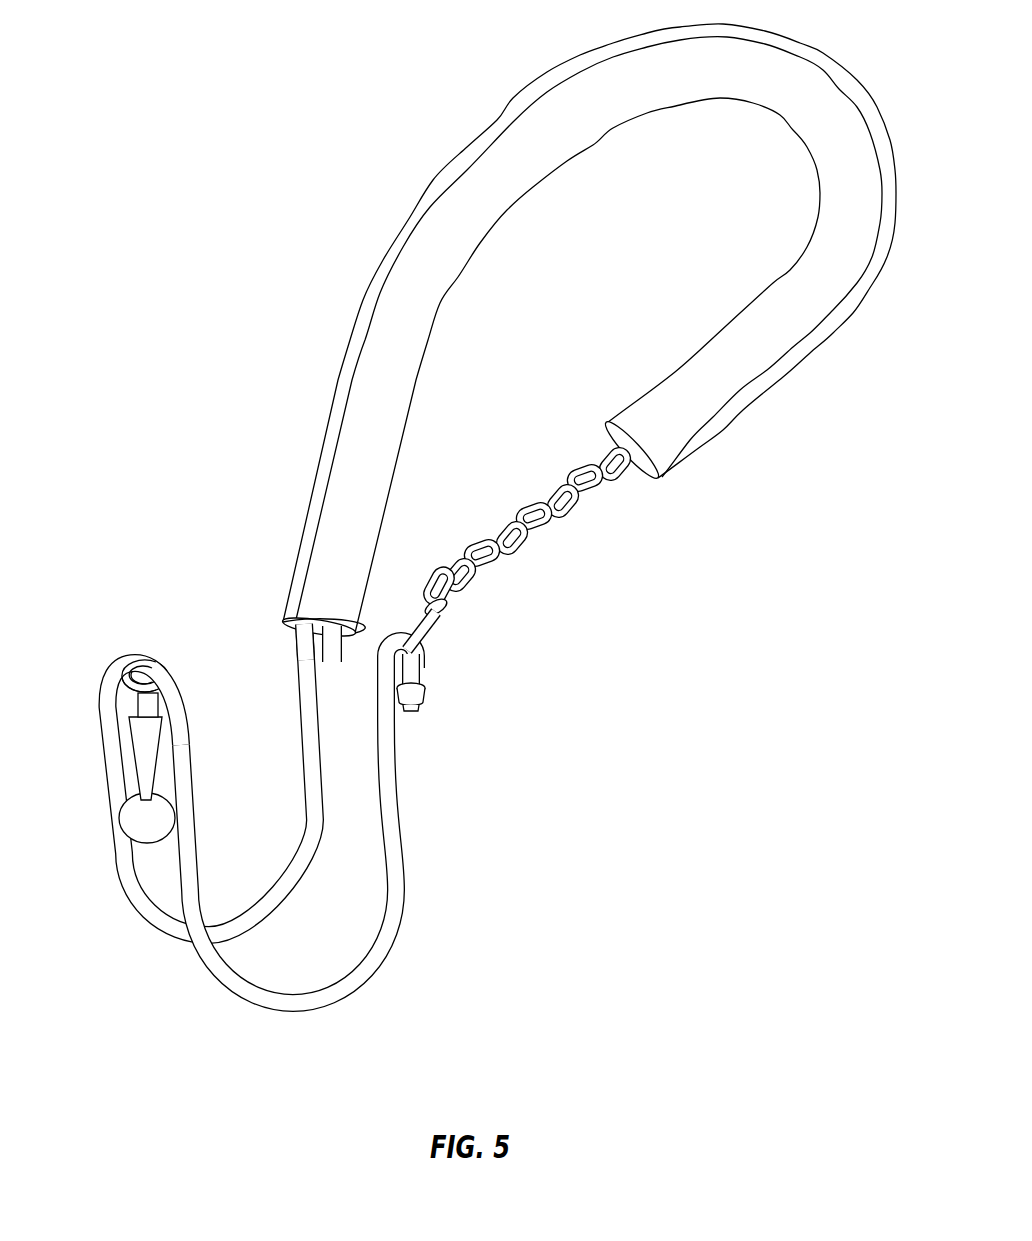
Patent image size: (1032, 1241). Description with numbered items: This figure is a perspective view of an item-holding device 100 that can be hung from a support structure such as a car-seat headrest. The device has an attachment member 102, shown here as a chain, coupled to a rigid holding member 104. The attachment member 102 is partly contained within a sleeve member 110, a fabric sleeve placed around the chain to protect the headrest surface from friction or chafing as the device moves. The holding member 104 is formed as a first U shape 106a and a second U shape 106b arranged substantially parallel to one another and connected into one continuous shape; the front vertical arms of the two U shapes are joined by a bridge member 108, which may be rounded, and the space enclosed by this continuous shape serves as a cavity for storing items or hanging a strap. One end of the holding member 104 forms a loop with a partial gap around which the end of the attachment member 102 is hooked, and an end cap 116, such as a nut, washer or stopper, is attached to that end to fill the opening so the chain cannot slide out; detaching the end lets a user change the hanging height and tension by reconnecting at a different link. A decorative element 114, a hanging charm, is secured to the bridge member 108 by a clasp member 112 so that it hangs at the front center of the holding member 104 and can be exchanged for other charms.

The item-holding device 100 is at (97, 77).
The attachment member 102 is at (565, 517).
The holding member 104 is at (407, 892).
The first U shape 106a is at (352, 988).
The second U shape 106b is at (257, 907).
The bridge member 108 is at (140, 652).
The sleeve member 110 is at (818, 344).
The clasp member 112 is at (148, 658).
The decorative element 114 is at (121, 805).
The end cap 116 is at (428, 688).